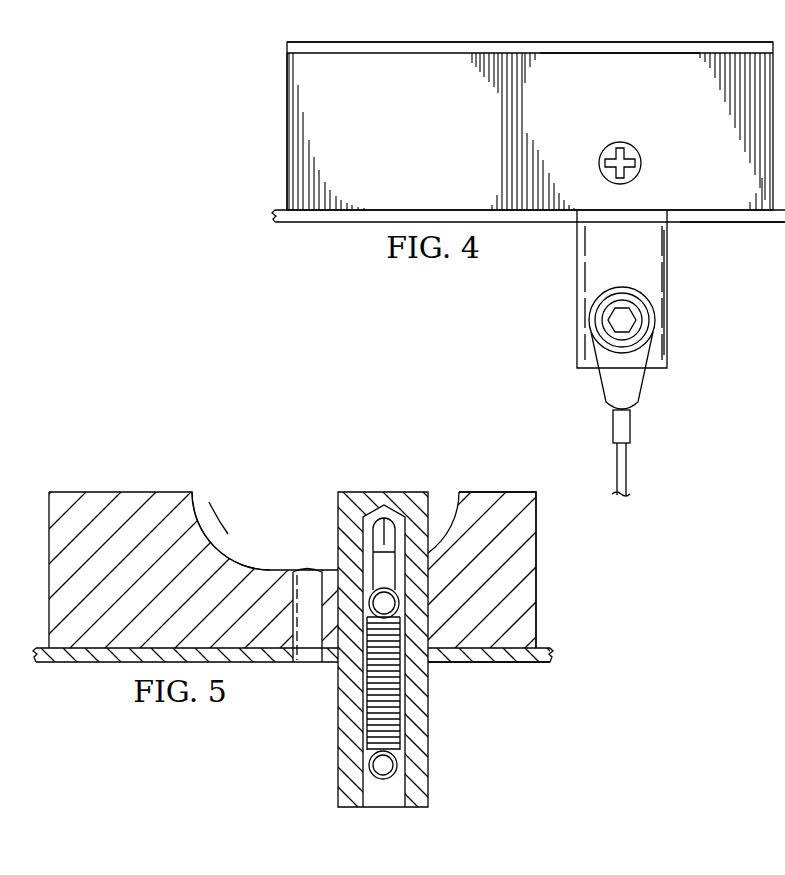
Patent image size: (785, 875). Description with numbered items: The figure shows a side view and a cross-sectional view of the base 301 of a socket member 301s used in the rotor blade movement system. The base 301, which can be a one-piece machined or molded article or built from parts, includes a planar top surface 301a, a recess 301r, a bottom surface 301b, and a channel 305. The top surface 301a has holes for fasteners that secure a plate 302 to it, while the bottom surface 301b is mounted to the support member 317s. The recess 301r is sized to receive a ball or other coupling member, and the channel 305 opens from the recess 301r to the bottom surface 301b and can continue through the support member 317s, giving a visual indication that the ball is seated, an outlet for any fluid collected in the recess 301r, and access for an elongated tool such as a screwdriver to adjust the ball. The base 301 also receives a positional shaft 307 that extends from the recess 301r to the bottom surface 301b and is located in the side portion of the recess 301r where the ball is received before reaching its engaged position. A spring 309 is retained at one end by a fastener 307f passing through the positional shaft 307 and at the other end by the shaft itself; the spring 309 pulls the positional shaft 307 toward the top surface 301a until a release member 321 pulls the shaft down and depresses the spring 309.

In FIG. 4, the base 301 is at (281, 146).
In FIG. 5, the base 301 is at (163, 436).
In FIG. 4, the socket member 301s is at (262, 94).
In FIG. 4, the top surface 301a is at (648, 52).
In FIG. 5, the top surface 301a is at (478, 492).
In FIG. 4, the bottom surface 301b is at (720, 212).
In FIG. 5, the bottom surface 301b is at (506, 662).
In FIG. 5, the recess 301r is at (232, 512).
In FIG. 4, the plate 302 is at (720, 42).
In FIG. 4, the channel 305 is at (572, 52).
In FIG. 5, the channel 305 is at (108, 492).
In FIG. 4, the positional shaft 307 is at (668, 280).
In FIG. 4, the fastener 307f is at (633, 156).
In FIG. 5, the spring 309 is at (367, 724).
In FIG. 4, the support member 317s is at (318, 226).
In FIG. 5, the support member 317s is at (82, 664).
In FIG. 4, the release member 321 is at (650, 322).